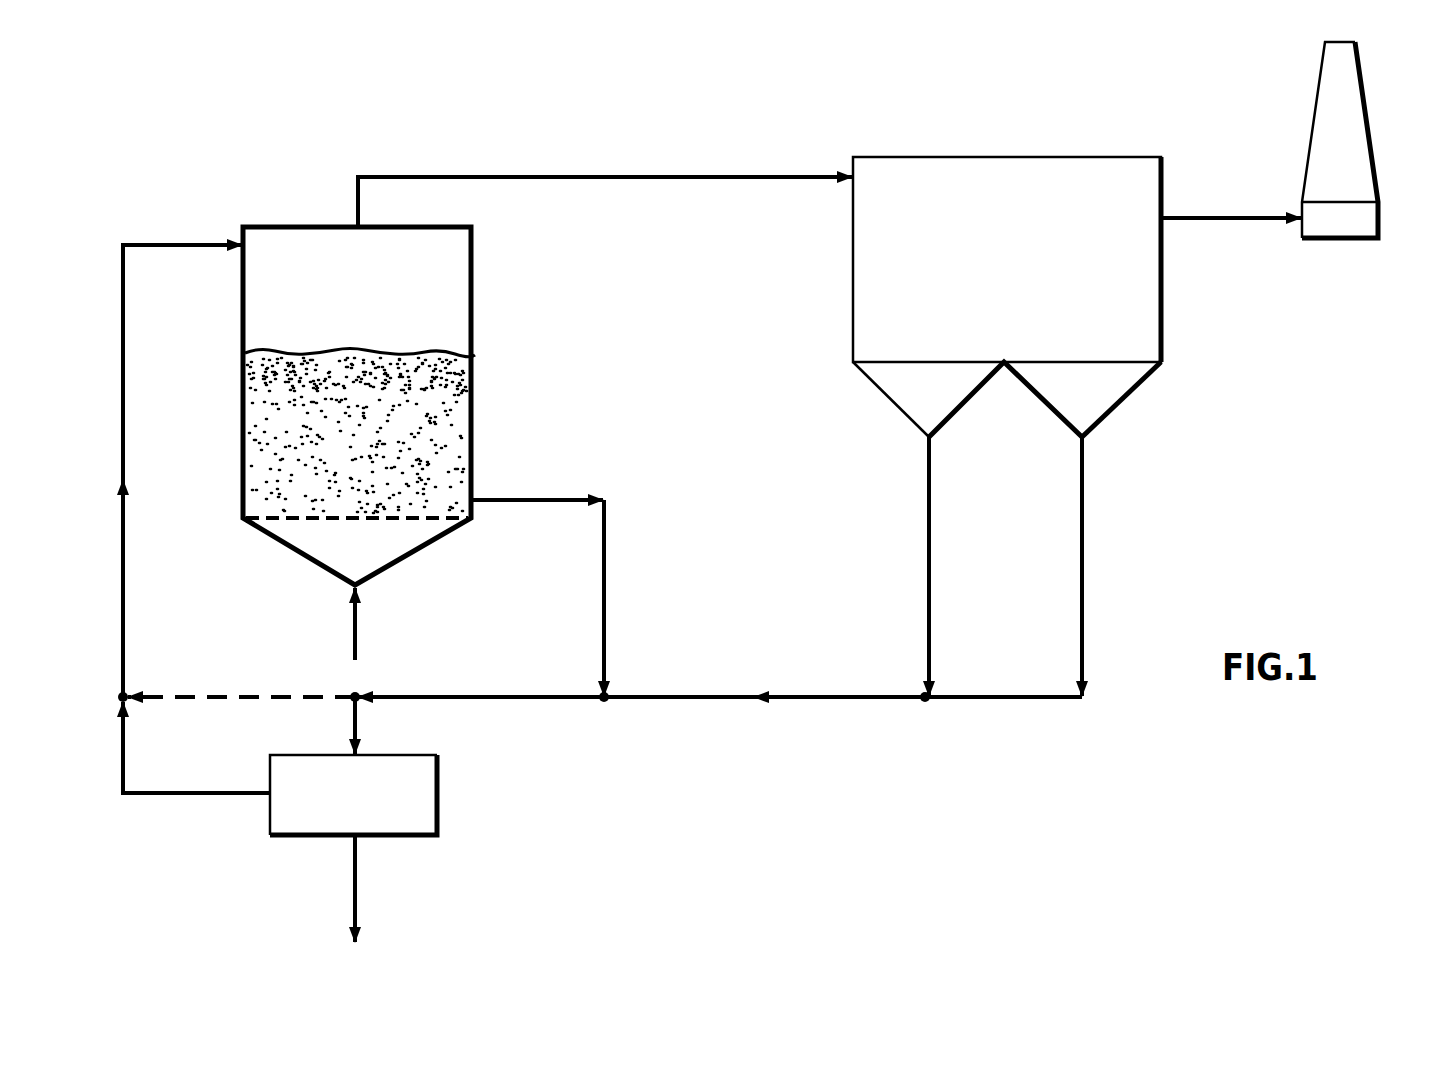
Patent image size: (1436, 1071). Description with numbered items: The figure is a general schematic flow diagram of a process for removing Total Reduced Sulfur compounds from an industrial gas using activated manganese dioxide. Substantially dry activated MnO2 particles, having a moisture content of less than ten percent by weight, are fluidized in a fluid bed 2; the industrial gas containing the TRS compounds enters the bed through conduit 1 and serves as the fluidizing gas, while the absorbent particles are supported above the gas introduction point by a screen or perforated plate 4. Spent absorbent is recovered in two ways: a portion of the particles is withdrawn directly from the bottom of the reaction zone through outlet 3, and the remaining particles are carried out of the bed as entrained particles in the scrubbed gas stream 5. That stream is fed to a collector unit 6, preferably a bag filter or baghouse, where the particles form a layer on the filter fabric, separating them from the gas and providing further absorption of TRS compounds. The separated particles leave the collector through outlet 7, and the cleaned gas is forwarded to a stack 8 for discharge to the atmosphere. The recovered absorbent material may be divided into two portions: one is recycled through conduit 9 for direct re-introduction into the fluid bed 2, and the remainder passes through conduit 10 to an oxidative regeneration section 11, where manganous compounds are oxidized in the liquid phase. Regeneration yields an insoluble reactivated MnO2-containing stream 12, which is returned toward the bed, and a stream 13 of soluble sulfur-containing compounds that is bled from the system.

The conduit 1 is at (355, 628).
The fluid bed 2 is at (422, 362).
The outlet 3 is at (607, 583).
The perforated plate 4 is at (313, 520).
The scrubbed gas stream 5 is at (607, 174).
The collector unit 6 is at (1027, 170).
The outlet 7 is at (928, 522).
The stack 8 is at (1352, 118).
The conduit 9 is at (227, 698).
The conduit 10 is at (355, 713).
The oxidative regeneration section 11 is at (418, 797).
The reactivated MnO2-containing stream 12 is at (208, 796).
The stream containing soluble sulfur-containing compounds 13 is at (352, 880).